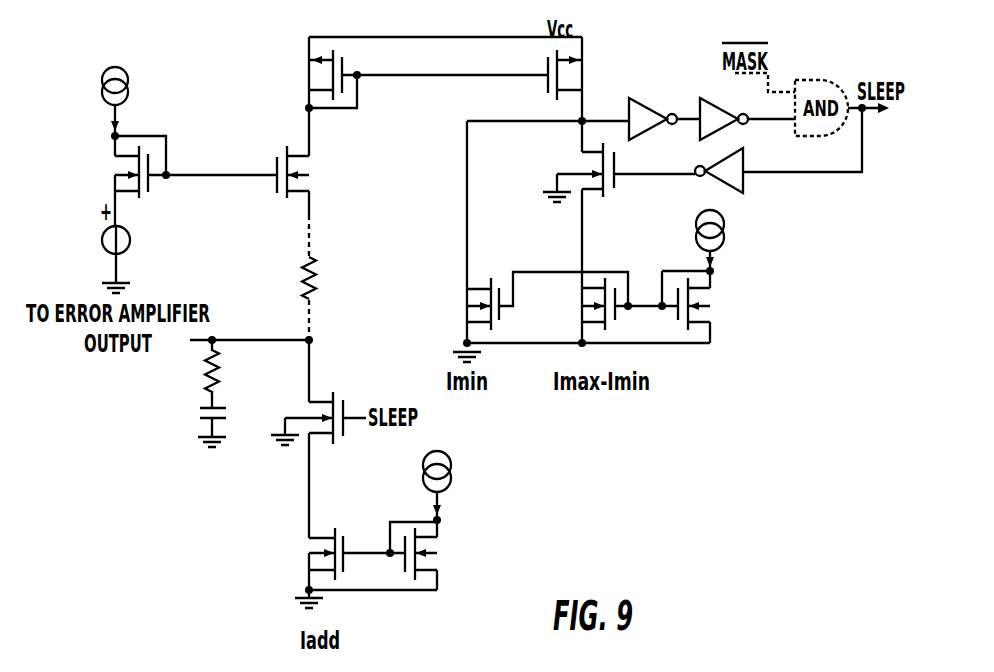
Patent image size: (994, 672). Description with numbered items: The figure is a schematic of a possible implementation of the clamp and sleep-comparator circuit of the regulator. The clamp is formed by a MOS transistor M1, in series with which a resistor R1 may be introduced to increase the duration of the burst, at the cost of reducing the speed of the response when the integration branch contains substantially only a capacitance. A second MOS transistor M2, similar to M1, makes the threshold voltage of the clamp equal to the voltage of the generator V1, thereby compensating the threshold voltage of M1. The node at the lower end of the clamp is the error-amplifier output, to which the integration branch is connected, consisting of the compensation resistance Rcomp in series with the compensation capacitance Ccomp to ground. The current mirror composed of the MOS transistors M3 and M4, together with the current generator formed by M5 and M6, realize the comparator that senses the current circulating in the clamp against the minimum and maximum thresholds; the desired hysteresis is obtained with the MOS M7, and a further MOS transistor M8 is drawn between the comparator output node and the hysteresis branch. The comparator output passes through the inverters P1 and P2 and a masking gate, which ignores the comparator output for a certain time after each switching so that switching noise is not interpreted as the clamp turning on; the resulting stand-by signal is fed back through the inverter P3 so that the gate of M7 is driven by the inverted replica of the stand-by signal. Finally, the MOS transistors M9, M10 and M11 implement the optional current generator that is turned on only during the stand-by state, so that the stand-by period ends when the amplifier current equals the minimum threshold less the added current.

The MOS transistor M1 is at (310, 172).
The second MOS transistor M2 is at (123, 172).
The MOS transistor M3 is at (317, 75).
The MOS transistor M4 is at (585, 75).
The MOS transistor of current generator M5 is at (469, 304).
The MOS transistor of current generator M6 is at (582, 304).
The hysteresis MOS transistor M7 is at (713, 304).
The transistor M8 is at (583, 168).
The MOS transistor M9 is at (325, 434).
The MOS transistor M10 is at (304, 554).
The MOS transistor M11 is at (443, 554).
The inverter P1 is at (653, 108).
The inverter P2 is at (724, 108).
The inverter P3 is at (732, 175).
The resistor R1 is at (326, 277).
The compensation resistance Rcomp is at (176, 374).
The compensation capacitance Ccomp is at (179, 421).
The voltage generator V1 is at (130, 243).